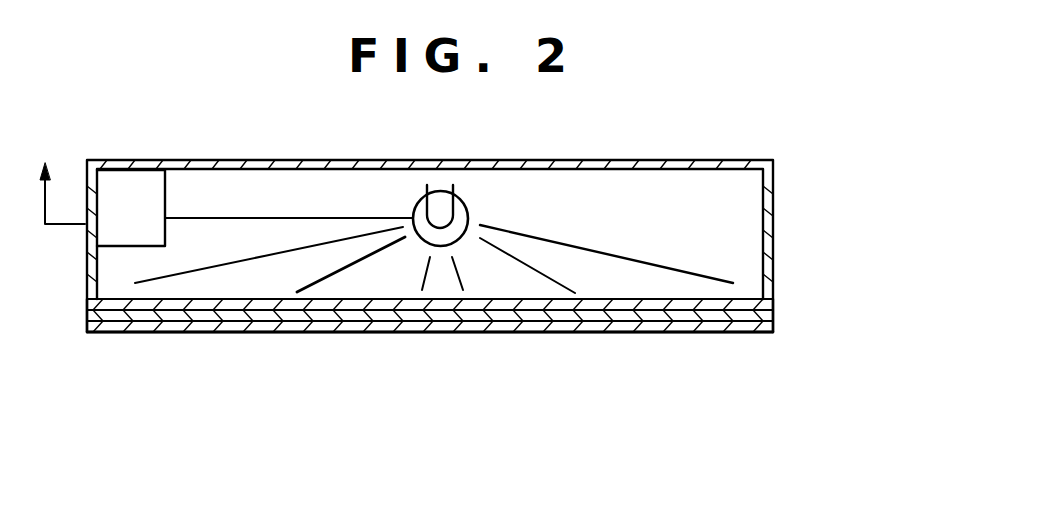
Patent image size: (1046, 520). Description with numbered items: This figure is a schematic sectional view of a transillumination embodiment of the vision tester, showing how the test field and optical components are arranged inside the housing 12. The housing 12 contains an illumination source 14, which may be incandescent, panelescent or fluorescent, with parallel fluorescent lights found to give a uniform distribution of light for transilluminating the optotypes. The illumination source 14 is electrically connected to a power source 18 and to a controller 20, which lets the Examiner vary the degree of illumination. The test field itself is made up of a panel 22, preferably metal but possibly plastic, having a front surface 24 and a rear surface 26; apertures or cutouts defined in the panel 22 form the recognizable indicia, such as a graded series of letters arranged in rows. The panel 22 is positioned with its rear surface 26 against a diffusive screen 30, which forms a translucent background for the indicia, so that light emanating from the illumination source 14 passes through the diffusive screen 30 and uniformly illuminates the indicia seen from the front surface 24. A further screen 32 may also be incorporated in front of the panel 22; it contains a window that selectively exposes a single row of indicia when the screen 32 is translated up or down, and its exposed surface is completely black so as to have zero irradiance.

The housing 12 is at (773, 172).
The illumination source 14 is at (466, 206).
The power source 18 is at (58, 169).
The controller 20 is at (133, 188).
The panel 22 is at (757, 313).
The front surface 24 is at (683, 322).
The rear surface 26 is at (712, 310).
The diffusive screen 30 is at (673, 298).
The screen 32 is at (243, 333).